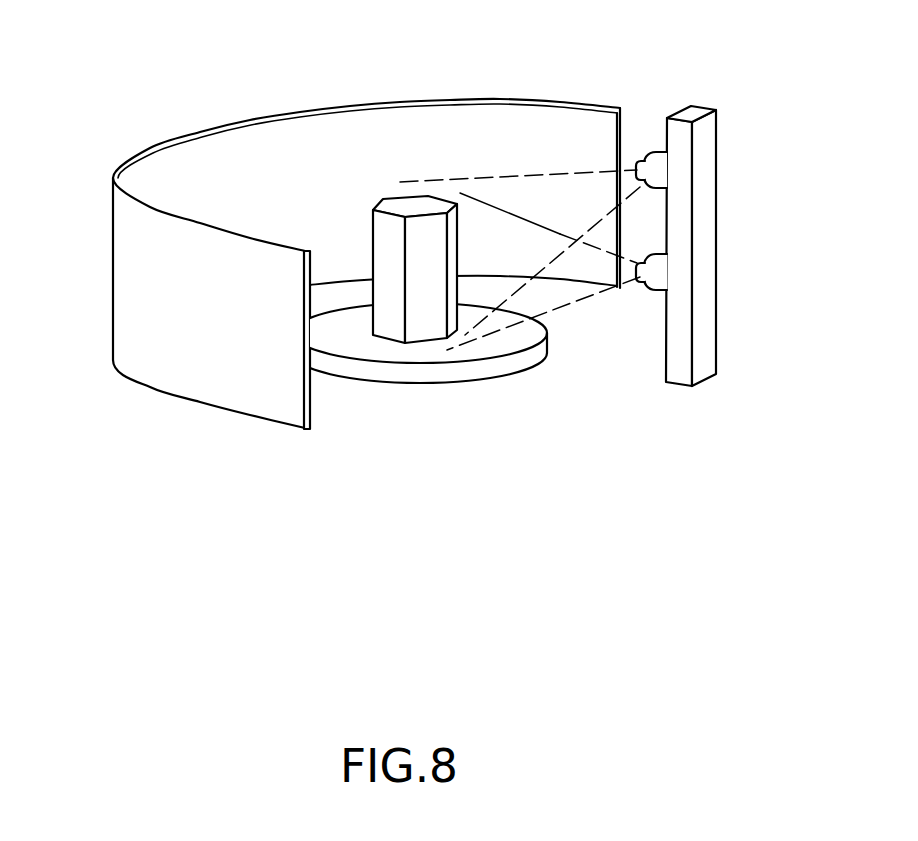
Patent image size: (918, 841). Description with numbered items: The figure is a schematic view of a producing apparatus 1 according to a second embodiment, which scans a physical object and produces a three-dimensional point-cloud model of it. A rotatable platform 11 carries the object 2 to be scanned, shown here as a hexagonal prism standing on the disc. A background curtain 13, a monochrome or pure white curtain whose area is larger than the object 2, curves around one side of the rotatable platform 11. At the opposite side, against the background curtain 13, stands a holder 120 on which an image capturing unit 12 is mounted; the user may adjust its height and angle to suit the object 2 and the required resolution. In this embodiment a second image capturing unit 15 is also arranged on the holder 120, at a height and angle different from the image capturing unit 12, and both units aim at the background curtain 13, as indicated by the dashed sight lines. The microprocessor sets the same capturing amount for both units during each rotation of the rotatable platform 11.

The producing apparatus 1 is at (376, 51).
The object 2 is at (393, 328).
The rotatable platform 11 is at (475, 372).
The image capturing unit 12 is at (657, 297).
The background curtain 13 is at (140, 287).
The second image capturing unit 15 is at (658, 162).
The holder 120 is at (707, 323).